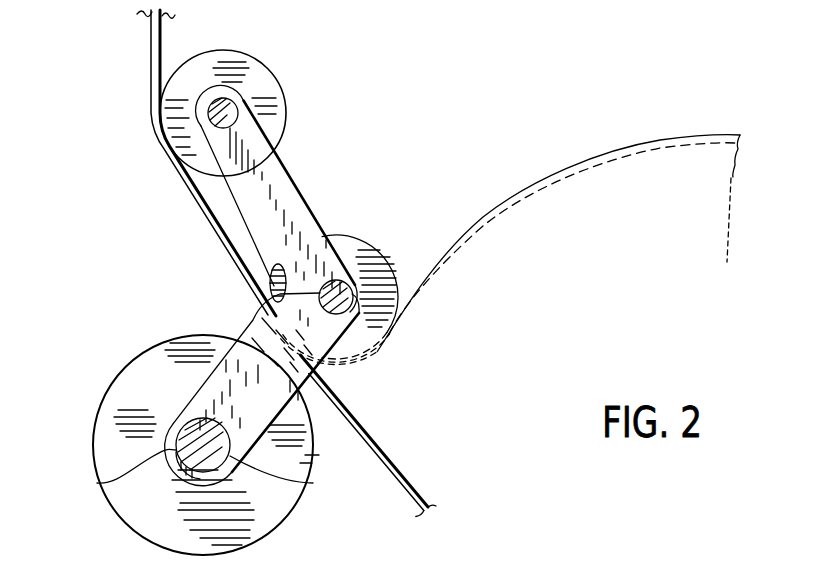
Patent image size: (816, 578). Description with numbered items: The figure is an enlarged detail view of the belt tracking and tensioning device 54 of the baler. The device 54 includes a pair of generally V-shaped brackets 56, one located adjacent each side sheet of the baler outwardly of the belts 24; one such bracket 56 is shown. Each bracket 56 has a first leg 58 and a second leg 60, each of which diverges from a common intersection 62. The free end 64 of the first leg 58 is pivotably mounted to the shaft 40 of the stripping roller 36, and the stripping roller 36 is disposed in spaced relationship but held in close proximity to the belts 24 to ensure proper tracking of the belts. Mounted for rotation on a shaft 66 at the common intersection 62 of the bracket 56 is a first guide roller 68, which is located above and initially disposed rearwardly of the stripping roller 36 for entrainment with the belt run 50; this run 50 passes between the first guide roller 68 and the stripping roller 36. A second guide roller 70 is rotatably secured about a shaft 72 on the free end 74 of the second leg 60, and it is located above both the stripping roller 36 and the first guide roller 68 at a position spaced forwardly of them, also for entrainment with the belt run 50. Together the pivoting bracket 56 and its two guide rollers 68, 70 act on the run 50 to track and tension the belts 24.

The belts 24 is at (150, 63).
The stripping roller 36 is at (95, 414).
The shaft 40 is at (97, 483).
The belt run 50 is at (378, 445).
The belt tracking and tensioning device 54 is at (337, 217).
The bracket 56 is at (361, 240).
The first leg 58 is at (238, 382).
The second leg 60 is at (287, 207).
The common intersection 62 is at (262, 302).
The free end 64 is at (313, 483).
The shaft 66 is at (356, 305).
The first guide roller 68 is at (390, 260).
The second guide roller 70 is at (278, 83).
The shaft 72 is at (238, 112).
The free end 74 is at (257, 128).